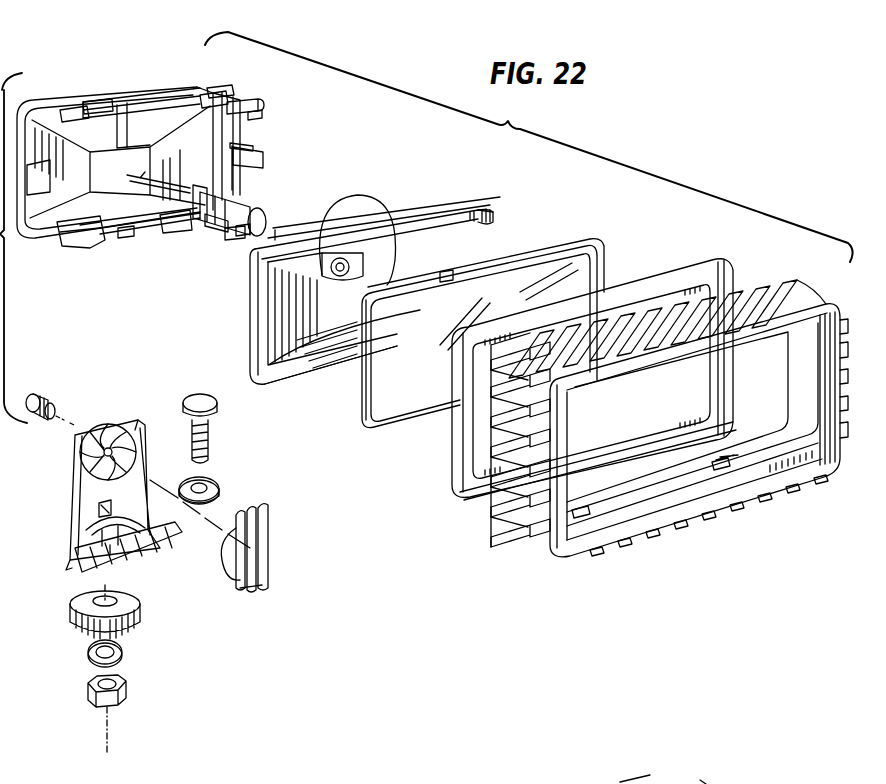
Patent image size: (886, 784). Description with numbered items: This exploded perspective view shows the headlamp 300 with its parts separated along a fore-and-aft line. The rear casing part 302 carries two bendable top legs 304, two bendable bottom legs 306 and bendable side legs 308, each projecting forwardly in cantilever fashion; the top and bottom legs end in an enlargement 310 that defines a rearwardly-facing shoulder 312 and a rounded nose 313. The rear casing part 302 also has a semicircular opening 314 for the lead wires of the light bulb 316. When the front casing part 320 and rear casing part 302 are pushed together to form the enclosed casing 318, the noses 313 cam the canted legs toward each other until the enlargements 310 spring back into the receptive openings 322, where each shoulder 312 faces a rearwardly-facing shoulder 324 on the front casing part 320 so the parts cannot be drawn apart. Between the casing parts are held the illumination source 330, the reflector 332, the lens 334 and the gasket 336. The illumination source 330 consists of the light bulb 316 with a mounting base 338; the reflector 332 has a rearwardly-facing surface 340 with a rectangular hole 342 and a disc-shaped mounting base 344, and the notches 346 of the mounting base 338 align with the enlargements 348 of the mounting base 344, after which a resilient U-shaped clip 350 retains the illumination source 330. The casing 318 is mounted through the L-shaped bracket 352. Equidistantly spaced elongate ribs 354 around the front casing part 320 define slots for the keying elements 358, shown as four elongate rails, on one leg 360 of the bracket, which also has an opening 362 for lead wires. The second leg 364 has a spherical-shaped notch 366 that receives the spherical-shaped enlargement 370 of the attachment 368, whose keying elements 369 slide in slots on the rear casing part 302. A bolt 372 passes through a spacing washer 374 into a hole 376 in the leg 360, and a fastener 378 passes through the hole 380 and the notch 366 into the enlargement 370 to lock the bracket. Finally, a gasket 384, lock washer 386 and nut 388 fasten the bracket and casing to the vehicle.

The headlamp 300 is at (708, 782).
The rear casing part 302 is at (147, 90).
The bendable top legs 304 is at (83, 117).
The bendable bottom legs 306 is at (97, 243).
The bendable side legs 308 is at (268, 172).
The enlargement 310 is at (256, 98).
The rearwardly-facing shoulder 312 is at (238, 87).
The rounded nose 313 is at (103, 113).
The semicircular opening 314 is at (143, 220).
The light bulb 316 is at (240, 240).
The casing 318 is at (653, 775).
The front casing part 320 is at (785, 277).
The receptive openings 322 is at (717, 467).
The rearwardly-facing shoulder 324 is at (600, 503).
The illumination source 330 is at (259, 207).
The reflector 332 is at (487, 203).
The lens 334 is at (567, 240).
The gasket 336 is at (670, 275).
The mounting base 338 is at (177, 223).
The rearwardly-facing surface 340 is at (327, 273).
The rectangular hole 342 is at (340, 260).
The mounting base 344 is at (395, 257).
The notches 346 is at (255, 146).
The enlargements 348 is at (352, 290).
The U-shaped clip 350 is at (160, 190).
The L-shaped bracket 352 is at (67, 520).
The elongate ribs 354 is at (512, 523).
The keying elements 358 is at (177, 543).
The leg 360 is at (90, 567).
The opening 362 is at (97, 513).
The second leg 364 is at (133, 432).
The spherical-shaped notch 366 is at (82, 433).
The attachment 368 is at (263, 517).
The keying elements 369 is at (262, 585).
The spherical-shaped enlargement 370 is at (267, 550).
The bolt 372 is at (213, 437).
The spacing washer 374 is at (217, 487).
The hole 376 is at (73, 570).
The fastener 378 is at (36, 393).
The hole 380 is at (137, 423).
The gasket 384 is at (97, 630).
The lock washer 386 is at (133, 652).
The nut 388 is at (103, 707).